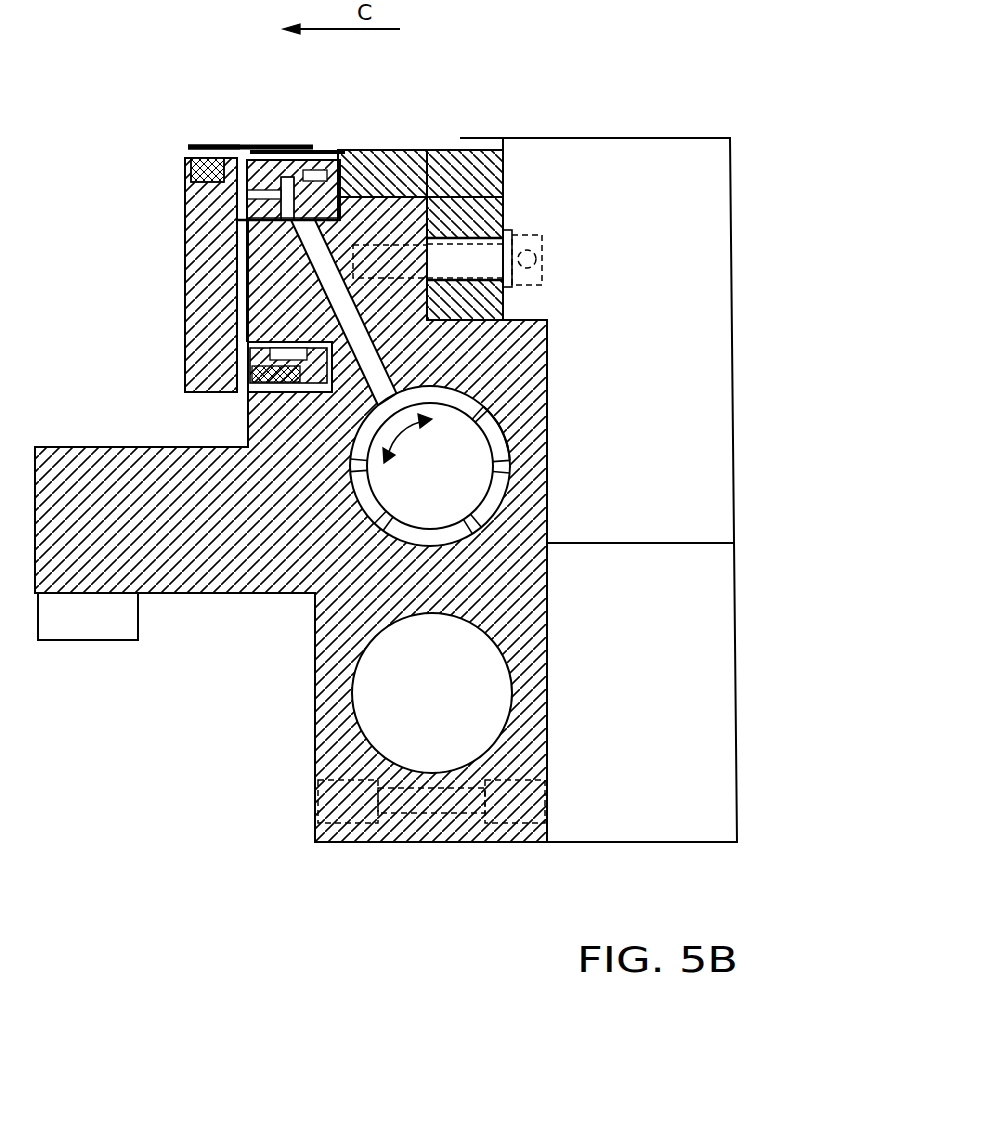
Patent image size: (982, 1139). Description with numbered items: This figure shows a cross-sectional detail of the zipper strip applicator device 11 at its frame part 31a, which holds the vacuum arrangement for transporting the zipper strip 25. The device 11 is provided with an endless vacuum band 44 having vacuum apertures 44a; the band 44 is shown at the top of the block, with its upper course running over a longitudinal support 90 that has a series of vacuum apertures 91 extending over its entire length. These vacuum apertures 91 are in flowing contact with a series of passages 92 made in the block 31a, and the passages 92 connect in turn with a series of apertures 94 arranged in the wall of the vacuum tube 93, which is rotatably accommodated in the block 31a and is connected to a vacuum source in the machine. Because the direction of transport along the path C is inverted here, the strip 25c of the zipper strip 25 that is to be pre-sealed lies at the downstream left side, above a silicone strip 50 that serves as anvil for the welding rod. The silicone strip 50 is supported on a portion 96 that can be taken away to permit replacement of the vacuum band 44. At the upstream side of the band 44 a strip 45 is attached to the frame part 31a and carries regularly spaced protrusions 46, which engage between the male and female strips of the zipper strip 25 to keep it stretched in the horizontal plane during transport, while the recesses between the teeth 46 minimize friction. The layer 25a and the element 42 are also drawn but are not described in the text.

The zipper strip applicator device 11 is at (728, 88).
The zipper strip 25 is at (253, 140).
The sheet layer 25a is at (288, 150).
The strip to be pre-sealed 25c is at (220, 146).
The frame part 31a is at (470, 148).
The holder block 42 is at (265, 200).
The endless vacuum band 44 is at (190, 196).
The vacuum apertures 44a is at (186, 166).
The strip 45 is at (410, 150).
The protrusions 46 is at (340, 152).
The silicone strip 50 is at (192, 158).
The longitudinal support 90 is at (262, 208).
The vacuum apertures 91 is at (262, 222).
The passages 92 is at (242, 340).
The vacuum tube 93 is at (395, 492).
The apertures 94 is at (492, 405).
The portion 96 is at (200, 318).